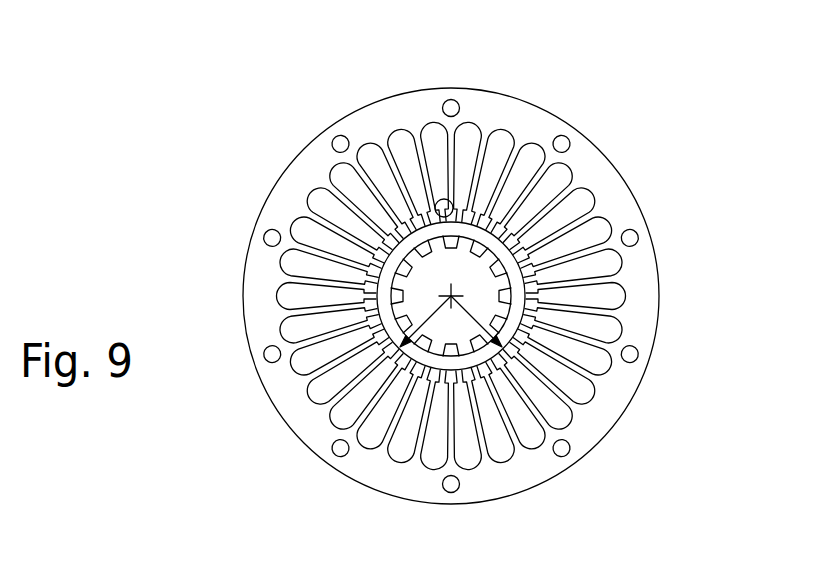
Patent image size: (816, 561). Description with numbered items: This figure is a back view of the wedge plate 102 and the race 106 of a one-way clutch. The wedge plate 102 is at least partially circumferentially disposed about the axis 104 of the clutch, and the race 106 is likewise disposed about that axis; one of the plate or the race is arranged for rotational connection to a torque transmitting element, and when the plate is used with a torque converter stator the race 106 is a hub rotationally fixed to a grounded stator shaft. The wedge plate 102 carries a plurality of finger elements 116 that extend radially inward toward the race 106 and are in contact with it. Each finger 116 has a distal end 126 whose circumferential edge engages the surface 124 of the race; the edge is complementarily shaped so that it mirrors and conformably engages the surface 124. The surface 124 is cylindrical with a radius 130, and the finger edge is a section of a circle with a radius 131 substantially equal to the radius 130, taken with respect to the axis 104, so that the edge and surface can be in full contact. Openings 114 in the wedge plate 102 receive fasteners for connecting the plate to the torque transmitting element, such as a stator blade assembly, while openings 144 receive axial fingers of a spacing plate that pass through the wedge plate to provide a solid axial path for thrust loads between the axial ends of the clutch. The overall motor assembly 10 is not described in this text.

The electric motor 10 is at (440, 200).
The wedge plate 102 is at (560, 105).
The axis 104 is at (395, 246).
The race 106 is at (522, 313).
The opening 114 is at (570, 451).
The finger element 116 is at (392, 157).
The surface 124 is at (475, 372).
The distal end 126 is at (350, 420).
The radius 130 is at (475, 318).
The radius 131 is at (451, 296).
The opening 144 is at (402, 445).